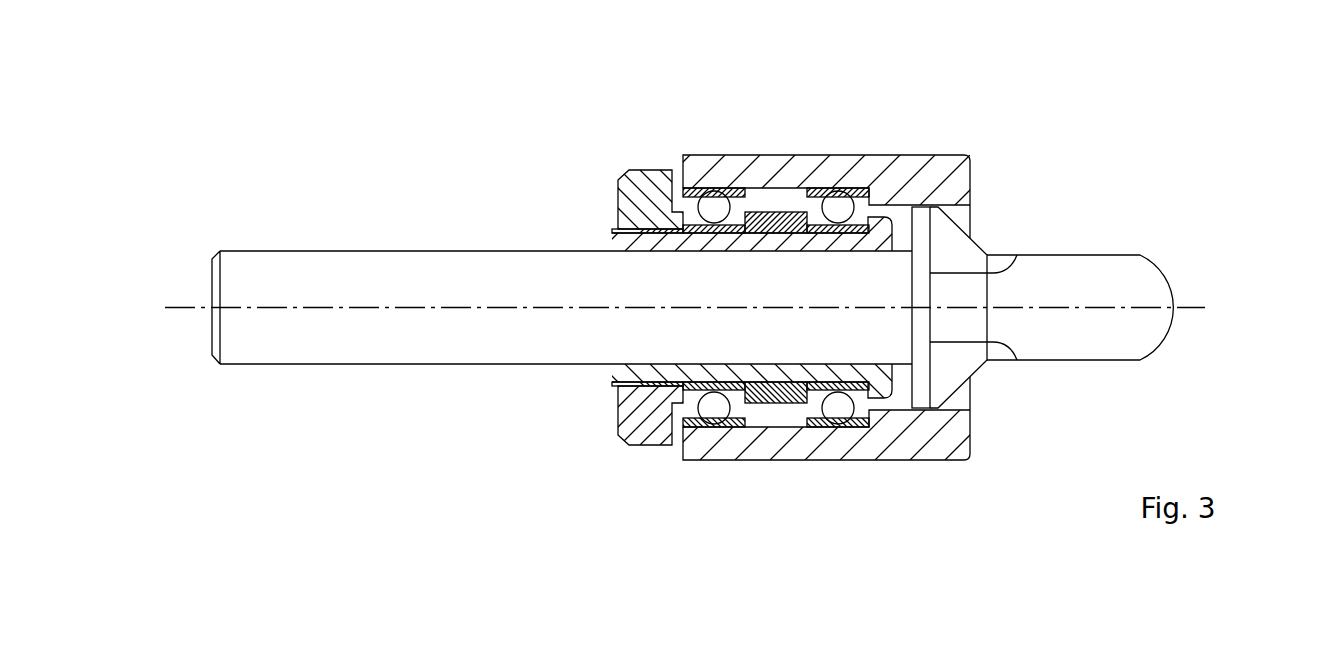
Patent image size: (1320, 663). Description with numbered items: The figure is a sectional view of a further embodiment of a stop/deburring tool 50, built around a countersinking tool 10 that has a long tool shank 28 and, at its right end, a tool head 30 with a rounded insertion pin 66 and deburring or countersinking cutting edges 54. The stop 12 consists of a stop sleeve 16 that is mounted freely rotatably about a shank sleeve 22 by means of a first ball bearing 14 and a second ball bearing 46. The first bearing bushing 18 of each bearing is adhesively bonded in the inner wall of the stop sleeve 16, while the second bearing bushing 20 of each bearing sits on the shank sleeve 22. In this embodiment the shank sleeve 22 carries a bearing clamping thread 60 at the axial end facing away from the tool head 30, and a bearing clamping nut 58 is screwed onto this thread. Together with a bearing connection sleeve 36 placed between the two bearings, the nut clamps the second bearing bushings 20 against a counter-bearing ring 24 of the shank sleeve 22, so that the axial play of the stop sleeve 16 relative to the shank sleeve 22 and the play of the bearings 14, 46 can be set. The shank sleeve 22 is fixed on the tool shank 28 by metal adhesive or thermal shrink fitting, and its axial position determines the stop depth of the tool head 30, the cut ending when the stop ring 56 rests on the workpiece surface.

The countersinking tool 10 is at (1072, 228).
The stop 12 is at (942, 130).
The first ball bearing 14 is at (709, 187).
The stop sleeve 16 is at (883, 152).
The first bearing bushing 18 is at (693, 190).
The second bearing bushing 20 is at (738, 232).
The shank sleeve 22 is at (888, 392).
The counter-bearing ring 24 is at (880, 398).
The tool shank 28 is at (365, 270).
The tool head 30 is at (975, 372).
The bearing connection sleeve 36 is at (770, 410).
The second ball bearing 46 is at (833, 187).
The stop/deburring tool 50 is at (1216, 235).
The deburring or countersinking cutting edges 54 is at (980, 236).
The stop ring 56 is at (970, 178).
The bearing clamping nut 58 is at (640, 434).
The bearing clamping thread 60 is at (626, 185).
The rounded insertion pin 66 is at (1160, 333).